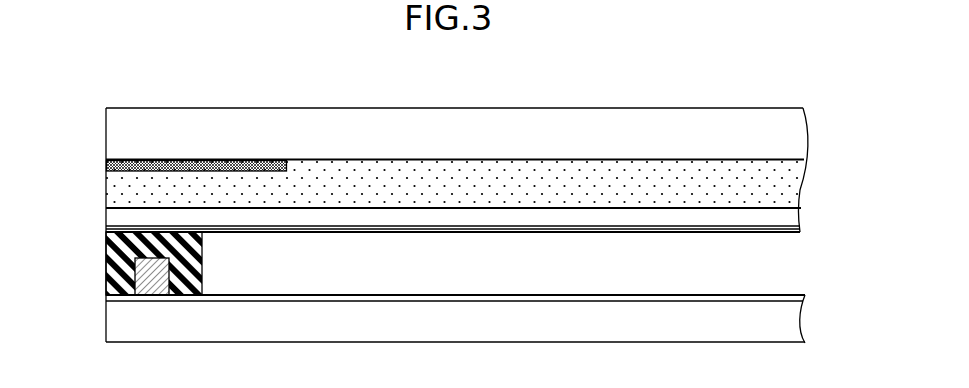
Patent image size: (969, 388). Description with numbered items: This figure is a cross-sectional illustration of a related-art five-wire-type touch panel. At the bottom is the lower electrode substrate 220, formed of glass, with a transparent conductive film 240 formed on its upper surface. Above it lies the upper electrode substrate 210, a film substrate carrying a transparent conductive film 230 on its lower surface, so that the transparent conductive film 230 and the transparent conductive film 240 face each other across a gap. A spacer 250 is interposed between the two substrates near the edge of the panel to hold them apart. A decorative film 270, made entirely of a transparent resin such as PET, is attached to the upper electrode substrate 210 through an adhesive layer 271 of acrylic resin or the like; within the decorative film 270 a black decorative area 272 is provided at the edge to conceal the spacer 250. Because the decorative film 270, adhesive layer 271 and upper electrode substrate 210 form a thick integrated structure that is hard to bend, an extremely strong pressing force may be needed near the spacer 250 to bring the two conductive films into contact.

The decorative film 270 is at (790, 140).
The adhesive layer 271 is at (790, 188).
The black decorative area 272 is at (108, 163).
The upper electrode substrate 210 is at (790, 222).
The transparent conductive film 230 is at (800, 232).
The spacer 250 is at (112, 251).
The transparent conductive film 240 is at (800, 296).
The lower electrode substrate 220 is at (790, 324).